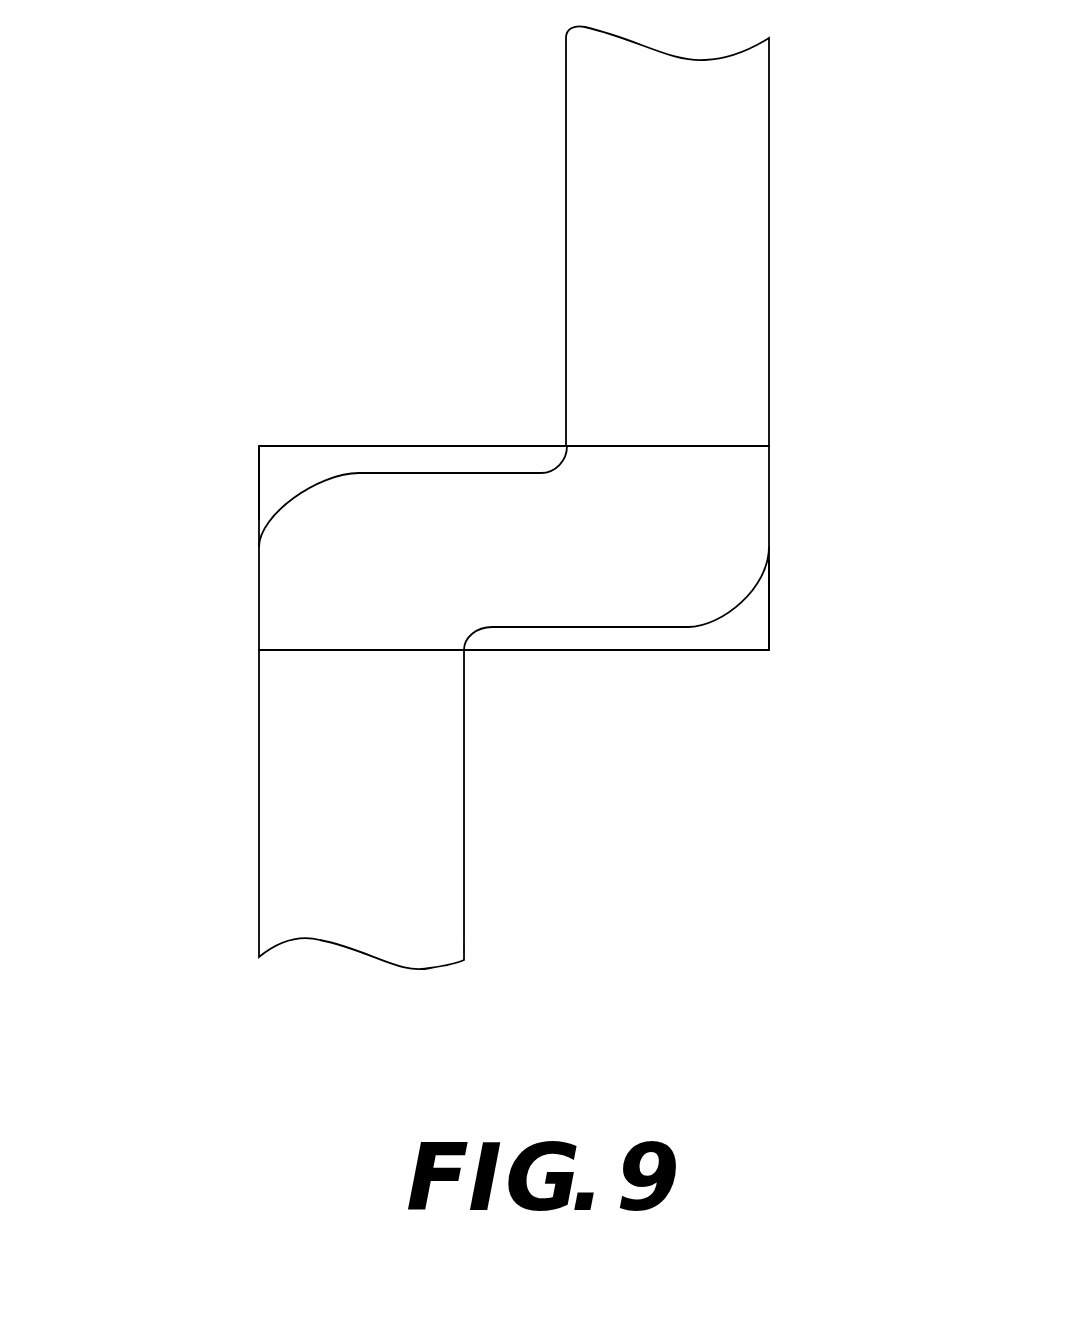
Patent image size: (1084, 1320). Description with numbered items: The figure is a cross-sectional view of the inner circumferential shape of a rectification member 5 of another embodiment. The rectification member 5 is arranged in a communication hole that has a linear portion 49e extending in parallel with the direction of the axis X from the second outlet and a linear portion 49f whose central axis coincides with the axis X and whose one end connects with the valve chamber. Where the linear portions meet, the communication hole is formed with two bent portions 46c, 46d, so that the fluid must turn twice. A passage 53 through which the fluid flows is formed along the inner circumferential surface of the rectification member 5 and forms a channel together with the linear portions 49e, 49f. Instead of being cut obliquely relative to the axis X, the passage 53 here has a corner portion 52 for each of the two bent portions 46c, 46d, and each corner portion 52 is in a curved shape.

The rectification member 5 is at (737, 447).
The linear portion 49e is at (464, 765).
The linear portion 49f is at (769, 240).
The corner portion 52 is at (320, 516).
The passage 53 is at (765, 524).
The bent portion 46c is at (248, 478).
The bent portion 46d is at (778, 592).